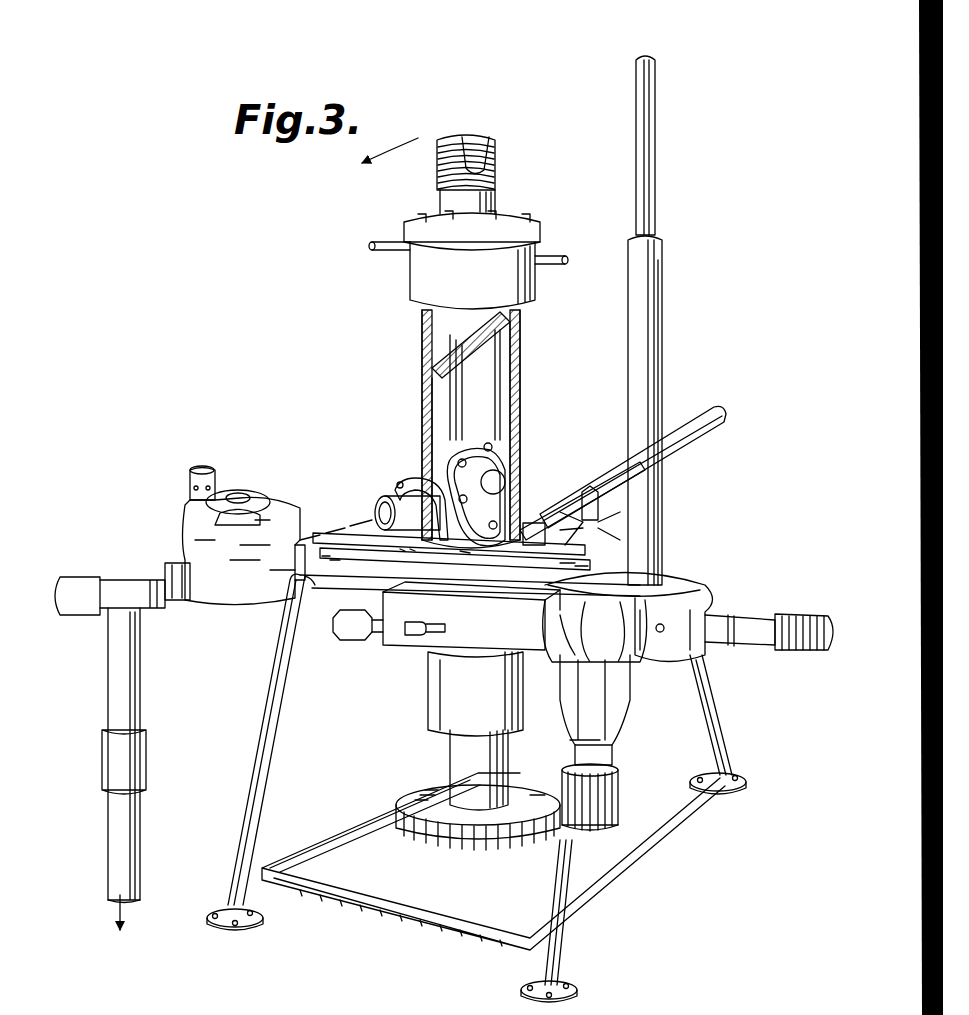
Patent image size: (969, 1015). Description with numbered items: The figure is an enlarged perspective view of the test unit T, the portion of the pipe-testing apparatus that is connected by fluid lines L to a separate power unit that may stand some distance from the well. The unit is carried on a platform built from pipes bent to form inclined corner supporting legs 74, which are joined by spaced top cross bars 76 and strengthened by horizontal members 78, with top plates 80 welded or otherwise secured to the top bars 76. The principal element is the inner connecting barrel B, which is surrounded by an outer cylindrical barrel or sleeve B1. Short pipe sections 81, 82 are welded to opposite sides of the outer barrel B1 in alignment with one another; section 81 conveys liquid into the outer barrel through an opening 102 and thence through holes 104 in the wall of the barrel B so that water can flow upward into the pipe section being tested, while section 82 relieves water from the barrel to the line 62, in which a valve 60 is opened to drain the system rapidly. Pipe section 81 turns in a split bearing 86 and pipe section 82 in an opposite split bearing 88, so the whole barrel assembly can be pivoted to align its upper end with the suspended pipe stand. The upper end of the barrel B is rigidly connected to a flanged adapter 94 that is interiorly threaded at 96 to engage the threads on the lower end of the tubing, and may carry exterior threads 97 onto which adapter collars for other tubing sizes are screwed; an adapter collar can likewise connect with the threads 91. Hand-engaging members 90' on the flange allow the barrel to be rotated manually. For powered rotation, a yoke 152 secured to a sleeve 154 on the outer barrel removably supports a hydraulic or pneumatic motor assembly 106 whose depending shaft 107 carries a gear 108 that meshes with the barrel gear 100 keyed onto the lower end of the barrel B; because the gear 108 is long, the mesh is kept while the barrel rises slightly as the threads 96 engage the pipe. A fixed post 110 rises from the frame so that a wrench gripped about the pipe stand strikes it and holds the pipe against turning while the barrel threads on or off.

The test unit T is at (335, 425).
The valve 60 is at (232, 595).
The line 62 is at (140, 835).
The inclined corner supporting legs 74 is at (560, 932).
The top cross bars 76 is at (362, 558).
The horizontal members 78 is at (412, 905).
The top plates 80 is at (600, 500).
The pipe section 81 is at (616, 455).
The pipe section 82 is at (378, 500).
The split bearing 86 is at (532, 523).
The split bearing 88 is at (418, 480).
The hand-engaging members 90' is at (428, 237).
The threads 91 is at (795, 625).
The flanged adapter 94 is at (495, 216).
The interior threads 96 is at (470, 140).
The exterior threads 97 is at (494, 162).
The gear 100 is at (480, 840).
The opening 102 is at (498, 465).
The holes 104 is at (490, 470).
The hydraulic or pneumatic motor assembly 106 is at (650, 640).
The depending shaft 107 is at (615, 770).
The gear 108 is at (612, 812).
The fixed post 110 is at (650, 350).
The yoke 152 is at (410, 632).
The sleeve 154 is at (442, 655).
The outer cylindrical barrel or sleeve B1 is at (512, 352).
The connecting barrel B is at (460, 753).
The fluid lines L is at (698, 418).